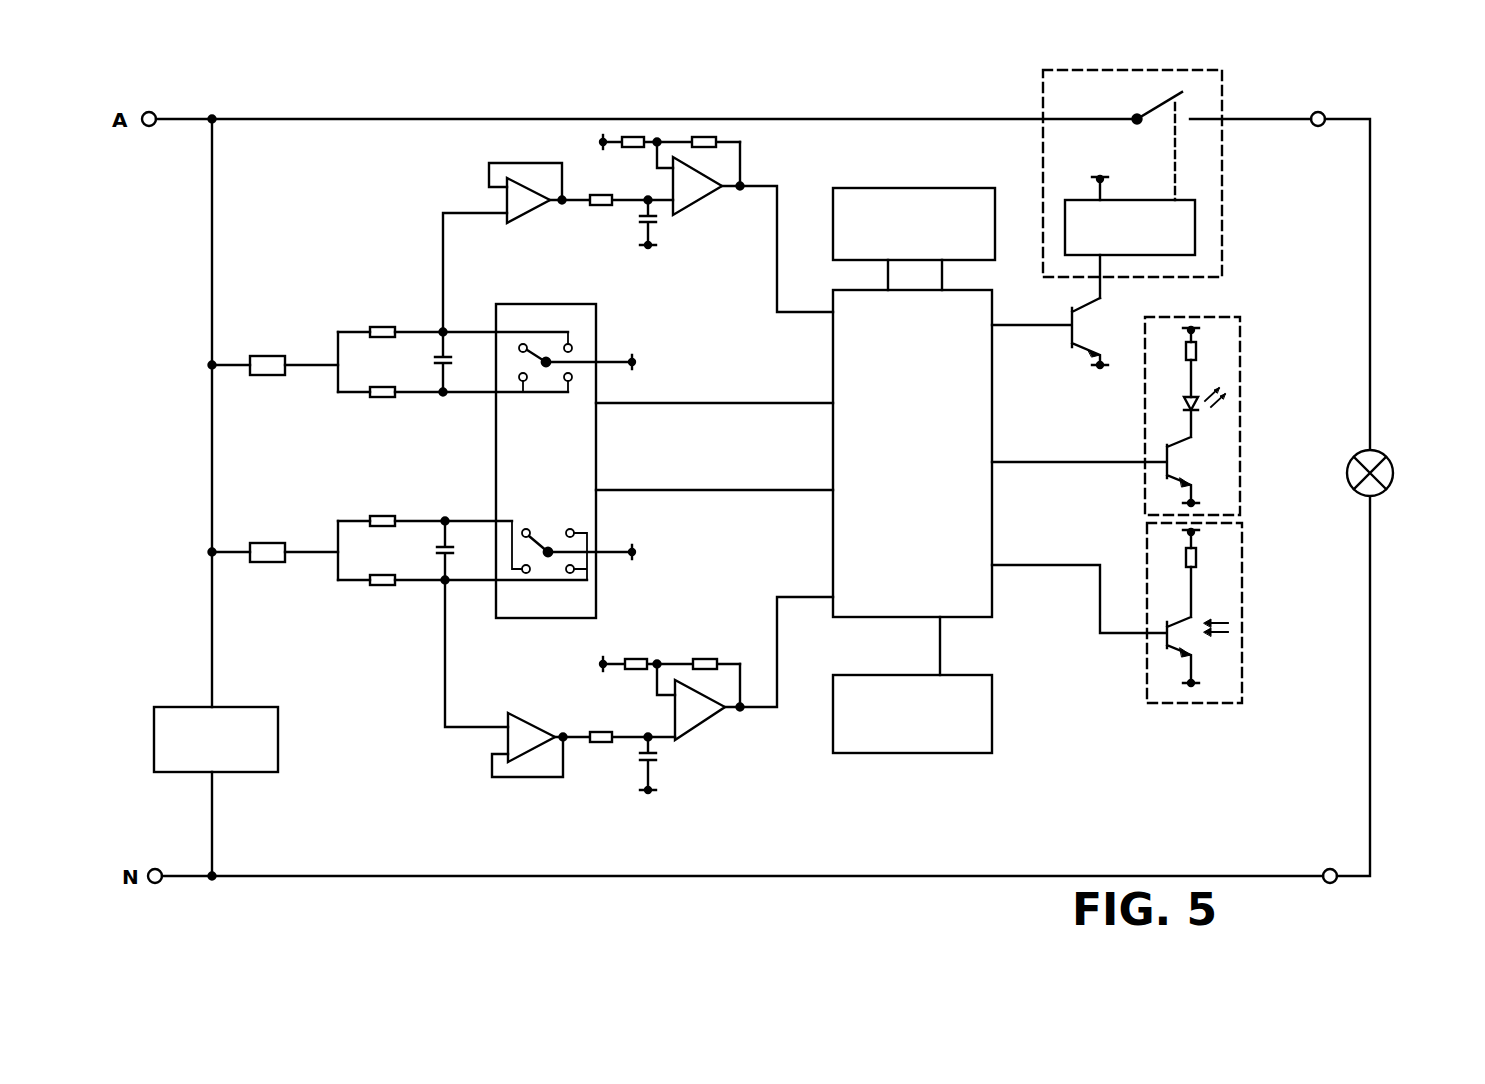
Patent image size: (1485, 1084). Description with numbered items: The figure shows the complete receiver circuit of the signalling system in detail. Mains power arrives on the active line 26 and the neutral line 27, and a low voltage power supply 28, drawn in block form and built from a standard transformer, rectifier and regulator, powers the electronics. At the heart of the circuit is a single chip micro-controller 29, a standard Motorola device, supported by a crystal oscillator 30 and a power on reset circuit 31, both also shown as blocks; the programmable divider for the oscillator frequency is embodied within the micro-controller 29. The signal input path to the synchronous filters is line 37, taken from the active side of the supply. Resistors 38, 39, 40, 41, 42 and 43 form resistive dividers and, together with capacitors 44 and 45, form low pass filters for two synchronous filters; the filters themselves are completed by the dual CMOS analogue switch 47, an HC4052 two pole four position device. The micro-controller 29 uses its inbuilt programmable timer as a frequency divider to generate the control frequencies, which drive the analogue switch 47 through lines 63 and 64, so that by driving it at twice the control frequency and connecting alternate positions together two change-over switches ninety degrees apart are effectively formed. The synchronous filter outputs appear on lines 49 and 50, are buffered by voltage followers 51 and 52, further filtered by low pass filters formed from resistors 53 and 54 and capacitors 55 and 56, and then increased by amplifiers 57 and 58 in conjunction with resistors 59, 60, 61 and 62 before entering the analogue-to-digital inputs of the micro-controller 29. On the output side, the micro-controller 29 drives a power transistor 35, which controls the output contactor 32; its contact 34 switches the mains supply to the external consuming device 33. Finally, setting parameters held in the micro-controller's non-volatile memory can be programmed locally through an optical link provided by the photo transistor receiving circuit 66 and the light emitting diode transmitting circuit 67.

The active line 26 is at (247, 118).
The neutral line 27 is at (397, 875).
The low voltage power supply 28 is at (267, 772).
The single chip micro-controller 29 is at (995, 418).
The crystal oscillator 30 is at (905, 188).
The power on reset circuit 31 is at (843, 753).
The output contactor 32 is at (1063, 210).
The external consuming device 33 is at (1388, 452).
The contact 34 is at (1168, 102).
The power transistor 35 is at (1100, 298).
The line 37 is at (213, 192).
The resistor 38 is at (378, 327).
The resistor 39 is at (385, 398).
The resistor 40 is at (382, 516).
The resistor 41 is at (370, 585).
The resistor 42 is at (268, 356).
The resistor 43 is at (266, 543).
The capacitor 44 is at (452, 355).
The capacitor 45 is at (452, 543).
The dual CMOS analogue switch 47 is at (600, 326).
The line 49 is at (445, 638).
The line 50 is at (443, 287).
The voltage follower 51 is at (530, 187).
The voltage follower 52 is at (528, 752).
The resistor 53 is at (592, 206).
The resistor 54 is at (597, 743).
The capacitor 55 is at (652, 222).
The capacitor 56 is at (645, 762).
The amplifier 57 is at (712, 178).
The amplifier 58 is at (700, 720).
The resistor 59 is at (633, 137).
The resistor 60 is at (705, 137).
The resistor 61 is at (635, 659).
The resistor 62 is at (703, 659).
The line 63 is at (716, 403).
The line 64 is at (718, 490).
The photo transistor receiving circuit 66 is at (1242, 558).
The light emitting diode transmitting circuit 67 is at (1240, 422).